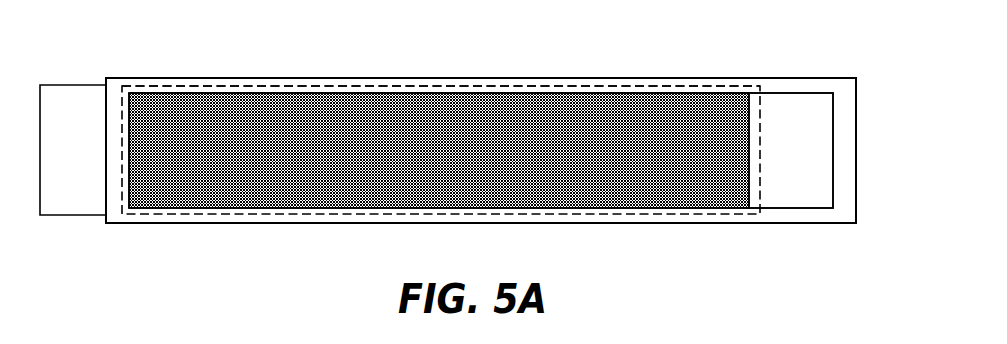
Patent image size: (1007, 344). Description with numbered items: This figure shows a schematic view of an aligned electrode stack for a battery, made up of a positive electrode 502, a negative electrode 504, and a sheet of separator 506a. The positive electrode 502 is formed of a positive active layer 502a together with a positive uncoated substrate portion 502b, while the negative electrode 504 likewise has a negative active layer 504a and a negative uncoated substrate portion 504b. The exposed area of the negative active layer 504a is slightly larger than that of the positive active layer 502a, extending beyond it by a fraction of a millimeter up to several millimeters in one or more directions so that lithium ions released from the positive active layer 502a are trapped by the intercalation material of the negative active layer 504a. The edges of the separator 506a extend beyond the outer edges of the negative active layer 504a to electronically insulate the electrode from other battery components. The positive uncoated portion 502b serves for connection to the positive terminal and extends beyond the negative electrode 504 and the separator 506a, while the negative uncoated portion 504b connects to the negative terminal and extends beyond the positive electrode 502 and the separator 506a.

The positive electrode 502 is at (748, 93).
The positive active layer 502a is at (627, 105).
The positive uncoated substrate portion 502b is at (788, 112).
The negative electrode 504 is at (123, 87).
The negative active layer 504a is at (495, 85).
The negative uncoated substrate portion 504b is at (83, 88).
The separator sheet 506a is at (355, 82).